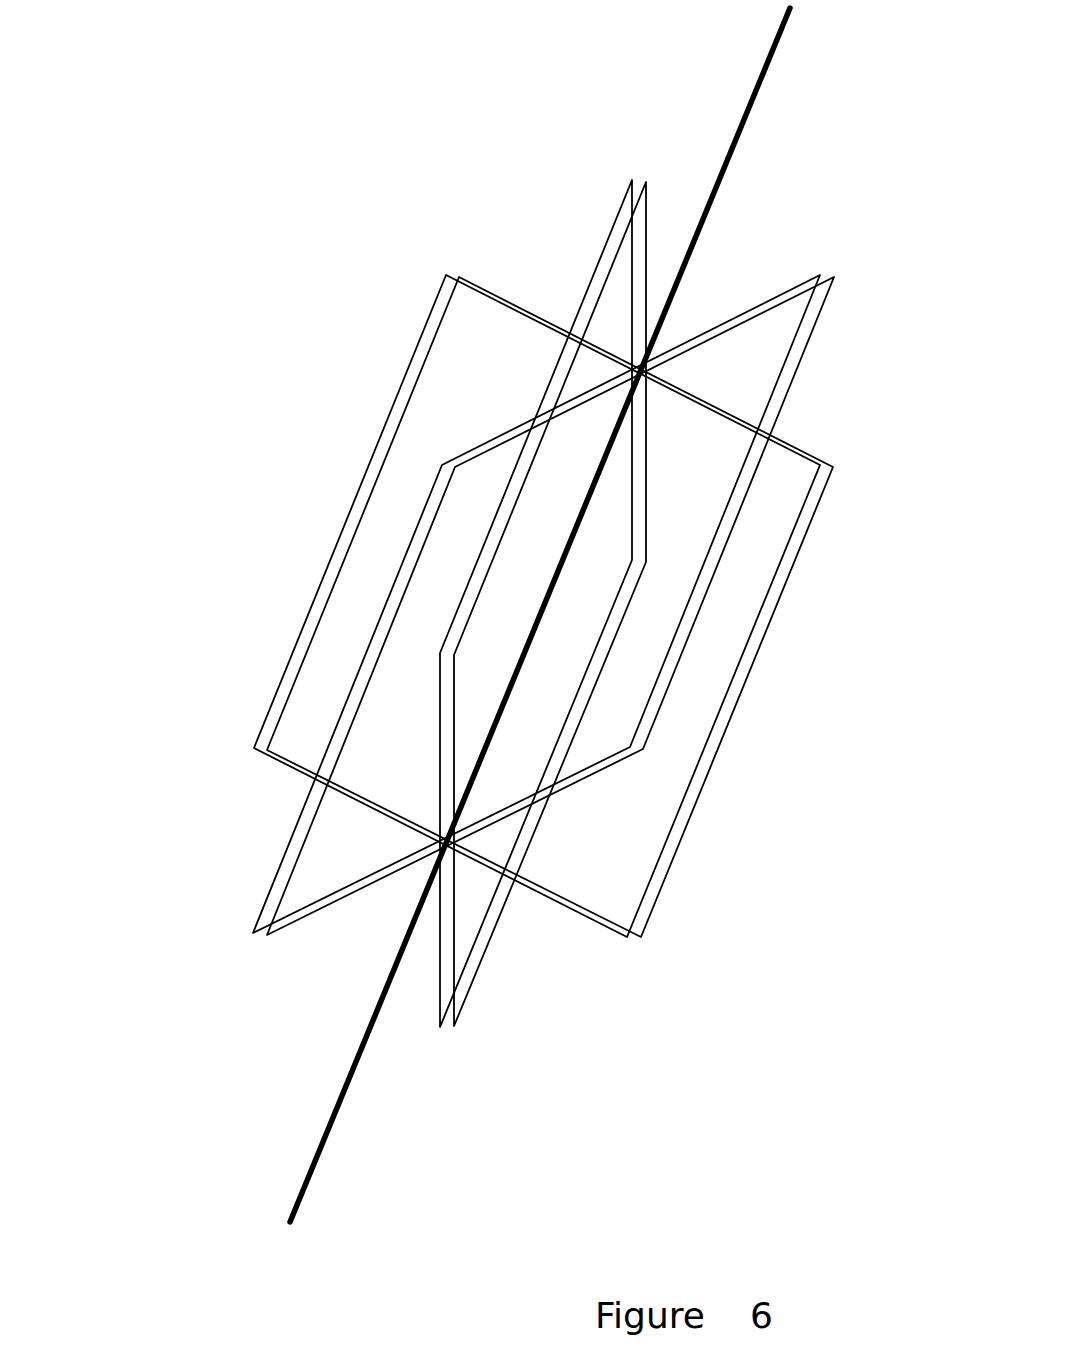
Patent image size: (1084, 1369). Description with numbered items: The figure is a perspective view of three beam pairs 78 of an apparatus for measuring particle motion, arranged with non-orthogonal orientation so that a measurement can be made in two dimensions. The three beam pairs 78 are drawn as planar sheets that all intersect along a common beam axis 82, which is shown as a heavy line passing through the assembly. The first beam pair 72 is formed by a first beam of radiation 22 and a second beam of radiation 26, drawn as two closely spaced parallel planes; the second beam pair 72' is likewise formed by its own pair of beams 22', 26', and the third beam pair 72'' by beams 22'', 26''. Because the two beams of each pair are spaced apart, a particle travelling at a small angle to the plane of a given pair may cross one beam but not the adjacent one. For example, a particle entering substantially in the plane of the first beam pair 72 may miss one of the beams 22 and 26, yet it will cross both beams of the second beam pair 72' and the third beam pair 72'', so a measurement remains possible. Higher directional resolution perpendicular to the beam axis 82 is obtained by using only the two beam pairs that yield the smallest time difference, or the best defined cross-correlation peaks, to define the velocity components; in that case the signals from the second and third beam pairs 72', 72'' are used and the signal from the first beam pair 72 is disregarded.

The three beam pairs 78 is at (415, 147).
The beam axis 82 is at (750, 107).
The first beam pair 72 is at (523, 630).
The second beam pair 72' is at (543, 635).
The third beam pair 72'' is at (484, 631).
The first beam of radiation 22 is at (550, 626).
The second beam of radiation 26 is at (516, 630).
The first beam of radiation of second beam pair 22' is at (550, 622).
The second beam of radiation of second beam pair 26' is at (537, 635).
The first beam of radiation of third beam pair 22'' is at (550, 632).
The second beam of radiation of third beam pair 26'' is at (509, 618).